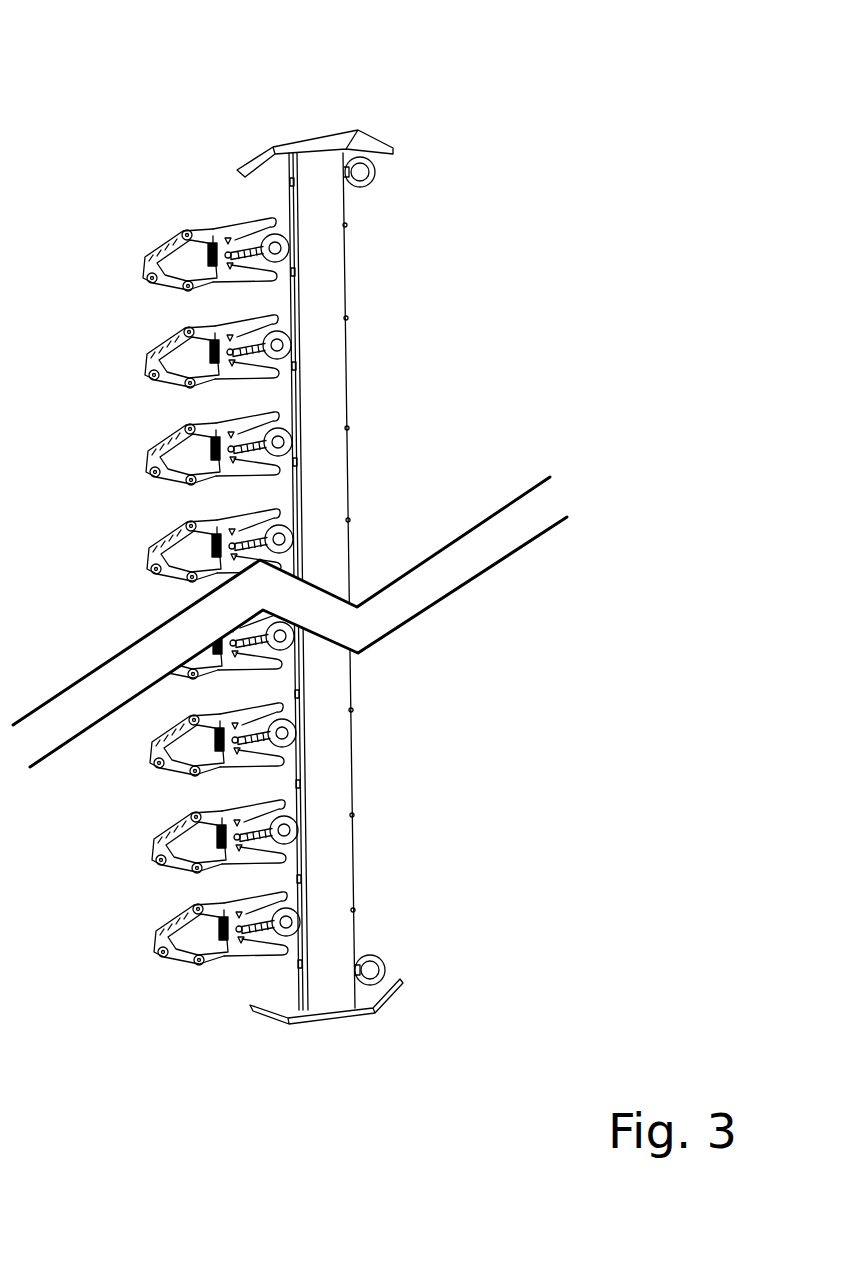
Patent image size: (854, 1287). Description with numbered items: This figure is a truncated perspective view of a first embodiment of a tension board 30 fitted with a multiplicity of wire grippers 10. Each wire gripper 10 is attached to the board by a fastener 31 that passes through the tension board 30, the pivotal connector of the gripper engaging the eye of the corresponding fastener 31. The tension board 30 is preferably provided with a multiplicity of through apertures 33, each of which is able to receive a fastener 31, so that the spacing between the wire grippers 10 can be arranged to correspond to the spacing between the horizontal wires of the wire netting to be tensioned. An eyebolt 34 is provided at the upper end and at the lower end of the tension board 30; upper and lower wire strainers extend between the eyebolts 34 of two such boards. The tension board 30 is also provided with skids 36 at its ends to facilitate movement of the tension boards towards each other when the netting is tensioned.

The wire gripper 10 is at (61, 978).
The tension board 30 is at (332, 380).
The fastener 31 is at (348, 528).
The through aperture 33 is at (282, 207).
The eyebolt 34 is at (375, 172).
The skid 36 is at (320, 148).